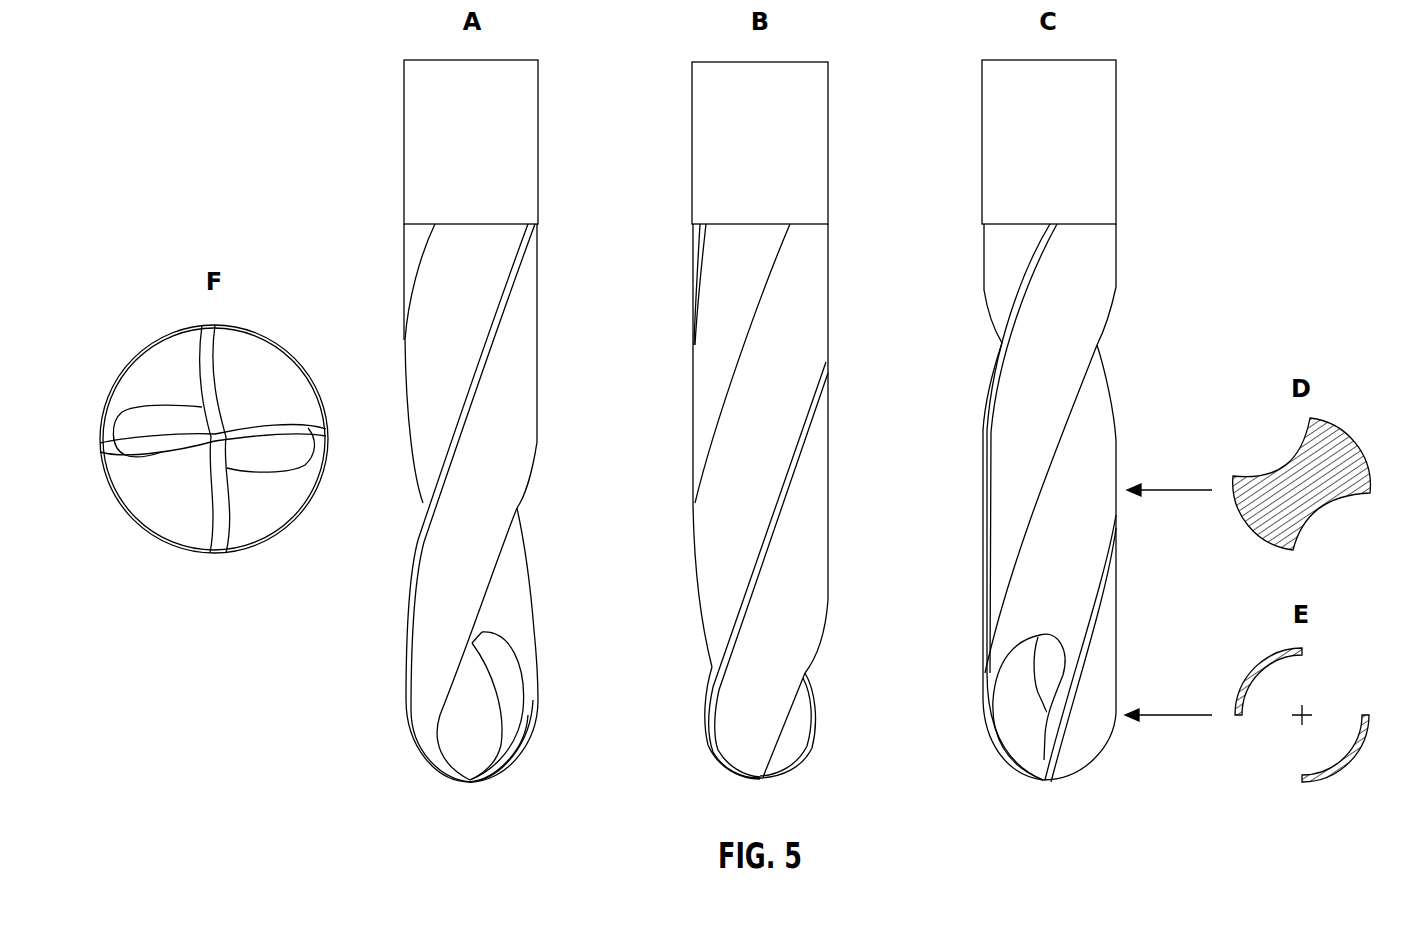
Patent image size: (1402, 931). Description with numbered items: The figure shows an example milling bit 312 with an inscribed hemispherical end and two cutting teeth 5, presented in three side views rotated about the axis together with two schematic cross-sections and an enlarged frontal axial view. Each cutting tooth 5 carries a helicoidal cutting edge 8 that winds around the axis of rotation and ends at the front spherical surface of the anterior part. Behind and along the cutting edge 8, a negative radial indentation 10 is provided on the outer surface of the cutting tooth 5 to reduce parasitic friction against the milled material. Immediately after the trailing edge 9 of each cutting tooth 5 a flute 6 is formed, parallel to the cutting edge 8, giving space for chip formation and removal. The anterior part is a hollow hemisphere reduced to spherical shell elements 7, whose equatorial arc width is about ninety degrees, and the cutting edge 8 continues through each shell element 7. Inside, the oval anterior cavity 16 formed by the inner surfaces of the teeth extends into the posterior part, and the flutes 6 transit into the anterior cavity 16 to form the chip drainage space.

The milling bit 312 is at (350, 92).
The cutting tooth 5 is at (447, 582).
The flute 6 is at (747, 455).
The spherical shell element 7 is at (740, 740).
The cutting edge 8 is at (750, 578).
The trailing edge 9 is at (533, 461).
The negative radial indentation 10 is at (478, 394).
The anterior cavity 16 is at (485, 732).